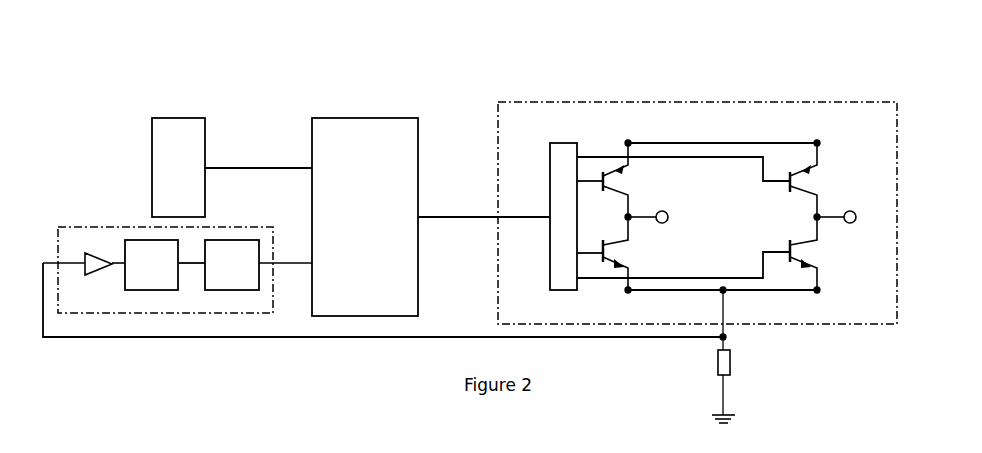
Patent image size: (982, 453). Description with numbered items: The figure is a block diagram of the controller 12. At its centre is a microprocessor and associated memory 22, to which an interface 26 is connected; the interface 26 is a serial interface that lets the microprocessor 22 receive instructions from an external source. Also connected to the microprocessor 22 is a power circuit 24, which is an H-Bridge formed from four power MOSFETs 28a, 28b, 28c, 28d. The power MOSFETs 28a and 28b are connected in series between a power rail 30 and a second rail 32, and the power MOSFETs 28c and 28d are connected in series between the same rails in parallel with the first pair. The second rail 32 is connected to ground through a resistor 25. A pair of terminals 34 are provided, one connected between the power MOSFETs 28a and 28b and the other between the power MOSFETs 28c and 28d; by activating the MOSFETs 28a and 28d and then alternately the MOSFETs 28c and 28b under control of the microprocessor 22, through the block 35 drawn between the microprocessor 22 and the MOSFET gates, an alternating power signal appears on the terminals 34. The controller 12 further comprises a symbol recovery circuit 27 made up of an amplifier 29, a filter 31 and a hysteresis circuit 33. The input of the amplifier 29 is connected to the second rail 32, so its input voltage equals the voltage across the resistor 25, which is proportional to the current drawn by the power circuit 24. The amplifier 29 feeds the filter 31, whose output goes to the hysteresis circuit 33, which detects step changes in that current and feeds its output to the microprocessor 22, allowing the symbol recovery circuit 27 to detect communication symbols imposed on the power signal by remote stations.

The controller 12 is at (392, 78).
The microprocessor and associated memory 22 is at (431, 217).
The power circuit 24 is at (761, 327).
The resistor 25 is at (709, 356).
The interface 26 is at (232, 167).
The symbol recovery circuit 27 is at (140, 225).
The power MOSFET 28a is at (629, 180).
The power MOSFET 28b is at (629, 253).
The power MOSFET 28c is at (721, 180).
The power MOSFET 28d is at (721, 253).
The amplifier 29 is at (84, 277).
The power rail 30 is at (722, 130).
The filter 31 is at (165, 265).
The second rail 32 is at (722, 303).
The hysteresis circuit 33 is at (258, 265).
The terminals 34 is at (754, 219).
The switch driver 35 is at (563, 216).